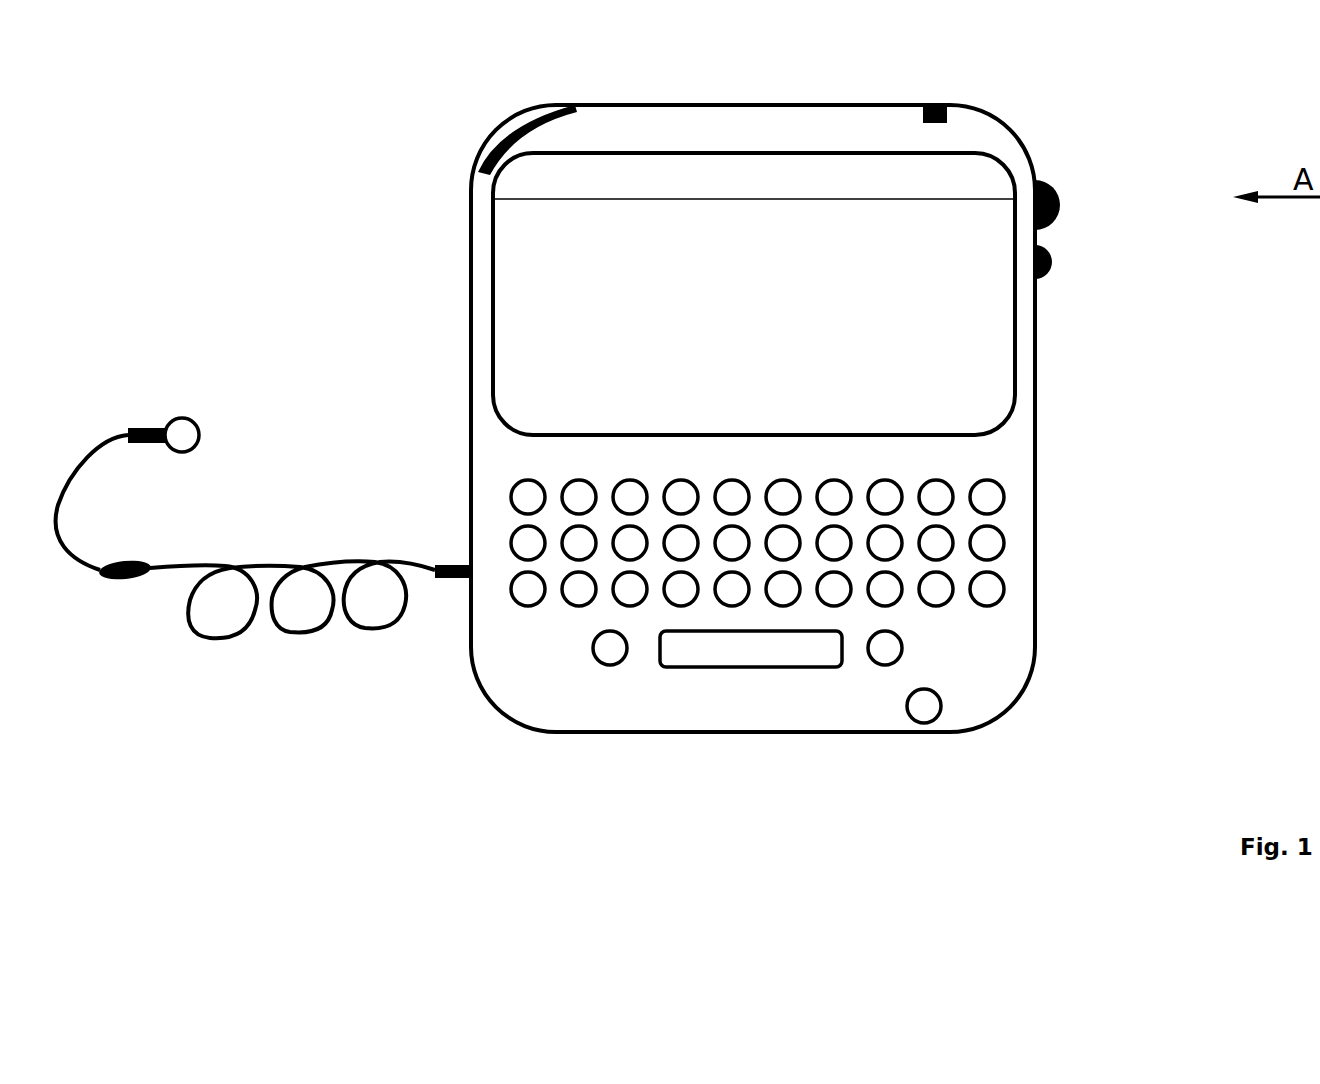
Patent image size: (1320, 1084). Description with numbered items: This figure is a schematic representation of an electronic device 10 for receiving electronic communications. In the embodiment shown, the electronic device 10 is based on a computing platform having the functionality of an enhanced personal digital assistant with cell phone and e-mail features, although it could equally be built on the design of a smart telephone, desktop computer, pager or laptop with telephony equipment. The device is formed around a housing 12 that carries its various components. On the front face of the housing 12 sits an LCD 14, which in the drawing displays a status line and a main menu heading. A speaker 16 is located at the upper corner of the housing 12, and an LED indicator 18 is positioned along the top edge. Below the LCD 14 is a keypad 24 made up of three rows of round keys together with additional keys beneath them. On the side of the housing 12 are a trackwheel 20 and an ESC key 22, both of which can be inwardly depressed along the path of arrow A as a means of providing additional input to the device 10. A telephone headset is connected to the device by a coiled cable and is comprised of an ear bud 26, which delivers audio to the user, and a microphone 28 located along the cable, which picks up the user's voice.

The electronic device 10 is at (706, 773).
The housing 12 is at (951, 721).
The LCD 14 is at (488, 420).
The speaker 16 is at (497, 131).
The LED indicator 18 is at (955, 112).
The trackwheel 20 is at (1060, 208).
The ESC key 22 is at (1055, 262).
The keypad 24 is at (1028, 548).
The ear bud 26 is at (220, 429).
The microphone 28 is at (166, 555).